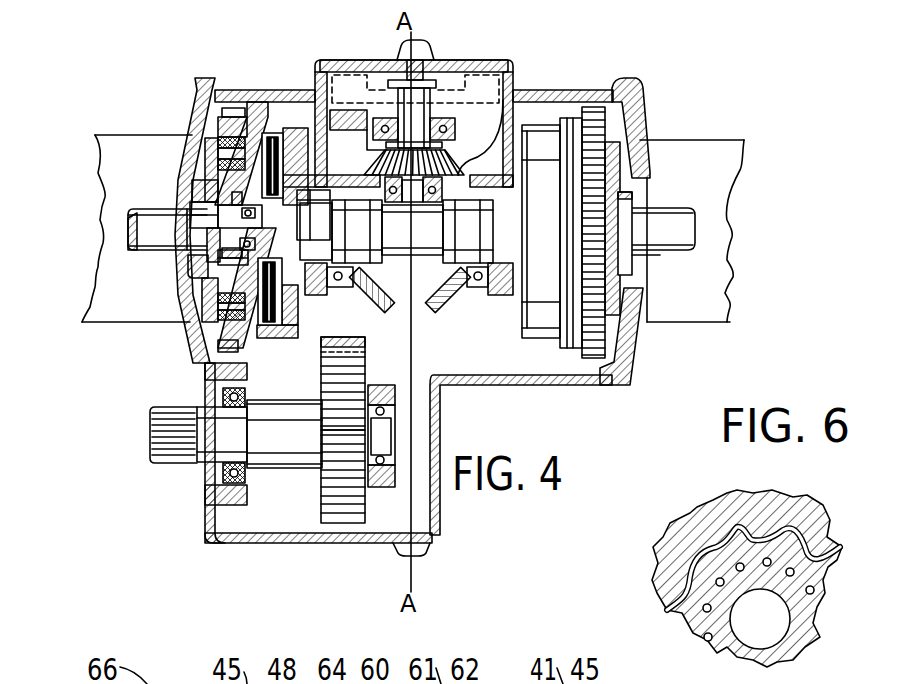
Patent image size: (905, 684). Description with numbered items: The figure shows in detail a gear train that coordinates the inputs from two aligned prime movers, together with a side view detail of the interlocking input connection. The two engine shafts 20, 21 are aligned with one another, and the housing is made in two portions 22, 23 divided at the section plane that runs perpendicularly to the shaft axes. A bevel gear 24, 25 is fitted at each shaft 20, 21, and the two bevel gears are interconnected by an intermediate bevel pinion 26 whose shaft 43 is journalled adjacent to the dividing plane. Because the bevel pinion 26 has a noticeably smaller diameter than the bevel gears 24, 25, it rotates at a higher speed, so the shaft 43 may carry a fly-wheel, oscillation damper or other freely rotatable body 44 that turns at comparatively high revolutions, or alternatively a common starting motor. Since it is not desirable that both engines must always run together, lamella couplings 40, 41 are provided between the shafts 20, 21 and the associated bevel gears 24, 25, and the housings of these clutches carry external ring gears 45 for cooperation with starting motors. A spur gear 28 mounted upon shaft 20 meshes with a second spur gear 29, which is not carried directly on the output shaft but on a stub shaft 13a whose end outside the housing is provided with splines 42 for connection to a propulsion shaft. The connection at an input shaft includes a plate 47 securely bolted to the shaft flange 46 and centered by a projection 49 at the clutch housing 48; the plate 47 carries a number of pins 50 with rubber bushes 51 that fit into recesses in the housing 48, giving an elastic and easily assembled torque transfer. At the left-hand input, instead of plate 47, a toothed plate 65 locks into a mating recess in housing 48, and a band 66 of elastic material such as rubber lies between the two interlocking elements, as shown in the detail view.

In FIG. 4, the stub shaft 13a is at (280, 450).
In FIG. 4, the shaft 20 is at (150, 247).
In FIG. 4, the shaft 21 is at (663, 228).
In FIG. 4, the housing portion 22 is at (202, 527).
In FIG. 4, the housing portion 23 is at (500, 386).
In FIG. 4, the bevel gear 24 is at (382, 297).
In FIG. 4, the bevel gear 25 is at (447, 297).
In FIG. 4, the intermediate bevel pinion 26 is at (447, 145).
In FIG. 4, the spur gear 28 is at (343, 333).
In FIG. 4, the second spur gear 29 is at (340, 503).
In FIG. 4, the lamella coupling 40 is at (267, 327).
In FIG. 4, the lamella coupling 41 is at (578, 125).
In FIG. 4, the splines 42 is at (162, 457).
In FIG. 4, the shaft 43 is at (437, 72).
In FIG. 4, the freely rotatable body 44 is at (361, 72).
In FIG. 4, the external ring gear 45 is at (237, 108).
In FIG. 4, the shaft flange 46 is at (190, 268).
In FIG. 4, the plate 47 is at (205, 163).
In FIG. 4, the clutch housing 48 is at (220, 140).
In FIG. 6, the clutch housing 48 is at (692, 517).
In FIG. 4, the projection 49 is at (202, 297).
In FIG. 4, the pins 50 is at (215, 80).
In FIG. 4, the rubber bushes 51 is at (256, 112).
In FIG. 6, the toothed plate 65 is at (800, 640).
In FIG. 6, the band of elastic material 66 is at (840, 562).